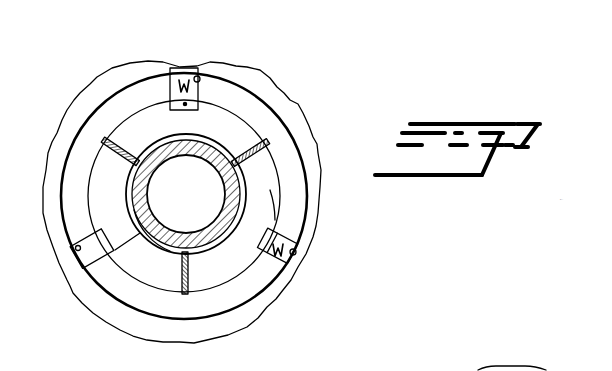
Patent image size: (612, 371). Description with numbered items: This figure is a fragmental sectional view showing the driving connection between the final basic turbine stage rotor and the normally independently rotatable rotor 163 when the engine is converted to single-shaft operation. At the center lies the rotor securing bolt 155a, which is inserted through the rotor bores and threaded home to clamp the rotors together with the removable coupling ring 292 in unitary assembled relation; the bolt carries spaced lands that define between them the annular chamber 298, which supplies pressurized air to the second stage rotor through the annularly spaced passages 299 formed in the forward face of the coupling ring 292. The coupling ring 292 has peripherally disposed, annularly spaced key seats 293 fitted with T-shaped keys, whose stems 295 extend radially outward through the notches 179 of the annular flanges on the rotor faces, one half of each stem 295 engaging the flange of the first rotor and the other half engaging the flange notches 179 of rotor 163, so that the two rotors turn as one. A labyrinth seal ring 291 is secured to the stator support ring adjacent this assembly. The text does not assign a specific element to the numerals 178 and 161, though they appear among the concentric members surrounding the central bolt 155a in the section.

The rotor 163 is at (262, 84).
The intermediate ring 178 is at (275, 185).
The rotor securing bolt 155a is at (235, 222).
The shaft bore 161 is at (226, 195).
The annularly spaced passages 299 is at (120, 153).
The annular chamber 298 is at (170, 248).
The key seats 293 is at (113, 257).
The stems 295 is at (178, 73).
The notches 179 is at (197, 75).
The labyrinth seal ring 291 is at (195, 103).
The coupling ring 292 is at (280, 218).